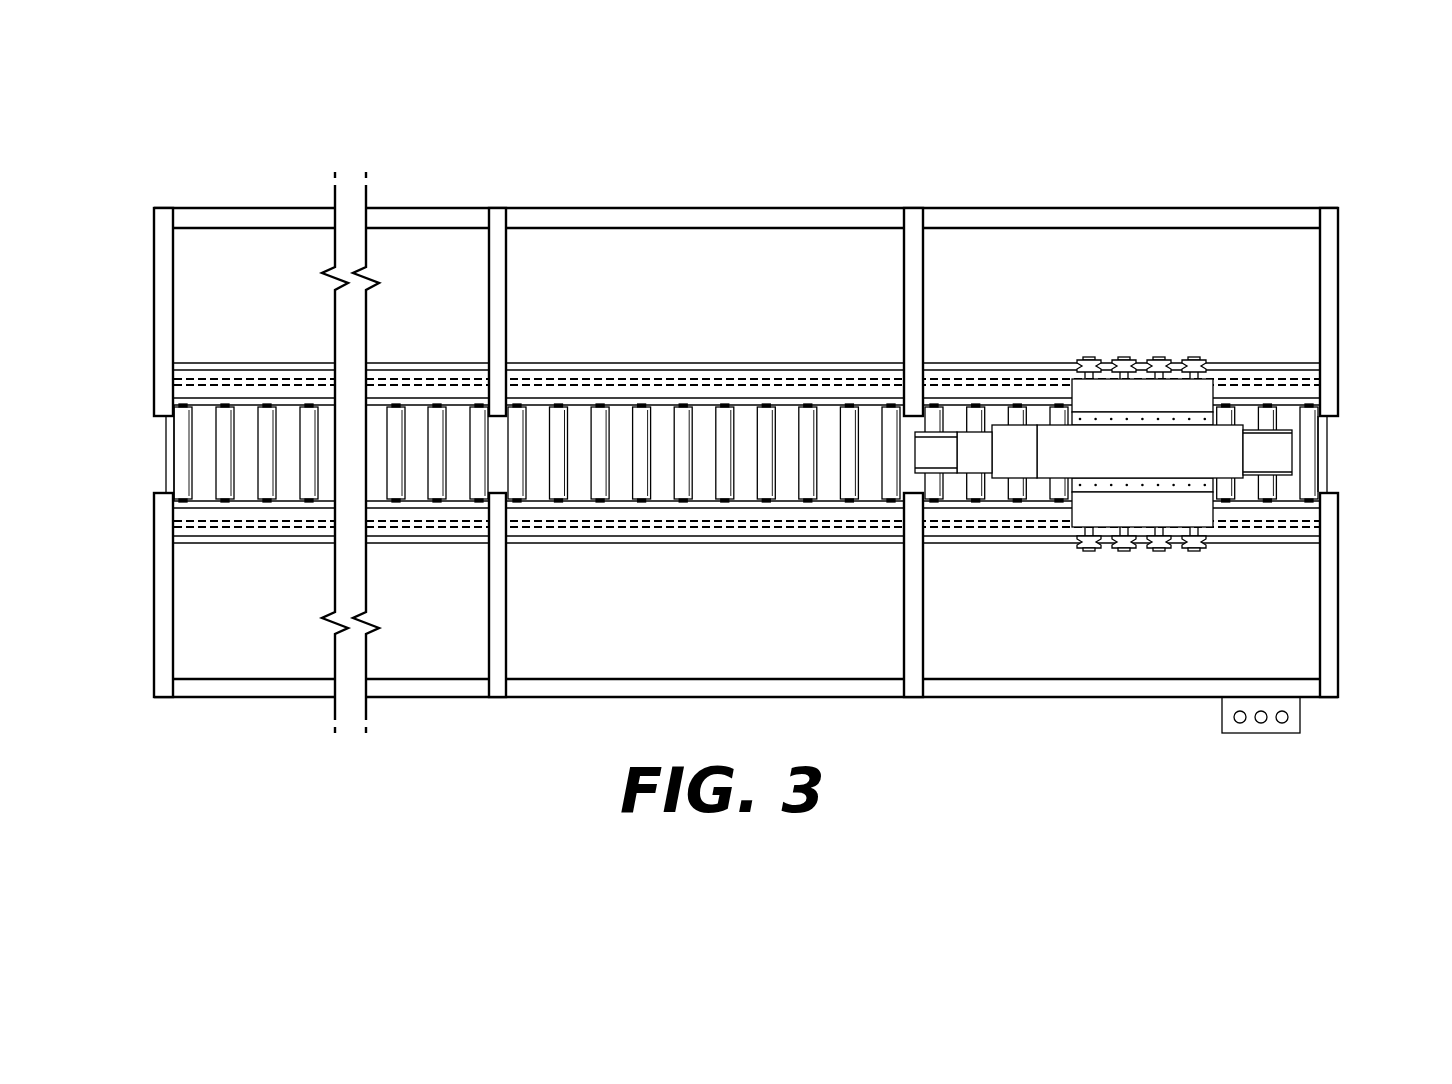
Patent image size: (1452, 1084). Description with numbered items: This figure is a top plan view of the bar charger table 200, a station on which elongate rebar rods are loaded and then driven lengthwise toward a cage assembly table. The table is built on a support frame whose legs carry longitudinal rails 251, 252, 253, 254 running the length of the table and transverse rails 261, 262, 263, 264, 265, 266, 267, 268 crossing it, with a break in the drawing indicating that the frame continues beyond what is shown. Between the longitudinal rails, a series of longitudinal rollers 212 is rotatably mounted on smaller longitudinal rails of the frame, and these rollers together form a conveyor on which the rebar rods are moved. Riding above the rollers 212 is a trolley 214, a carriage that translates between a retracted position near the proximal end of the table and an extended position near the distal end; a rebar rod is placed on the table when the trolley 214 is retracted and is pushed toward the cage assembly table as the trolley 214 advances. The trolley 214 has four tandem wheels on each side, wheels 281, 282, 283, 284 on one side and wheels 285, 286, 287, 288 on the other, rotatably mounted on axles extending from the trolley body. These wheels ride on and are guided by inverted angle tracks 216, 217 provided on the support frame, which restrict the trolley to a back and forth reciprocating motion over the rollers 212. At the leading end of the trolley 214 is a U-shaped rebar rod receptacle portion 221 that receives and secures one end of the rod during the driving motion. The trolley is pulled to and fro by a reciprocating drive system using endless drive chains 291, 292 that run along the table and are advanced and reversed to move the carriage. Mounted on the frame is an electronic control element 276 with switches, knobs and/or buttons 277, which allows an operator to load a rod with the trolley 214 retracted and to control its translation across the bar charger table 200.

The bar charger table 200 is at (658, 108).
The longitudinal rollers 212 is at (723, 457).
The trolley 214 is at (1161, 464).
The inverted angle track 216 is at (1270, 363).
The inverted angle track 217 is at (1270, 547).
The rebar rod receptacle portion 221 is at (928, 452).
The longitudinal rail 251 is at (760, 220).
The longitudinal rail 252 is at (747, 330).
The longitudinal rail 253 is at (747, 576).
The longitudinal rail 254 is at (845, 688).
The transverse rail 261 is at (164, 292).
The transverse rail 262 is at (164, 611).
The transverse rail 263 is at (499, 292).
The transverse rail 264 is at (499, 611).
The transverse rail 265 is at (905, 296).
The transverse rail 266 is at (922, 630).
The transverse rail 267 is at (1328, 292).
The transverse rail 268 is at (1328, 612).
The electronic control element 276 is at (1328, 728).
The switches, knobs and/or buttons 277 is at (1282, 723).
The wheel 281 is at (1080, 552).
The wheel 282 is at (1118, 552).
The wheel 283 is at (1162, 552).
The wheel 284 is at (1200, 552).
The wheel 285 is at (1087, 357).
The wheel 286 is at (1124, 357).
The wheel 287 is at (1160, 357).
The wheel 288 is at (1197, 357).
The drive chain 291 is at (990, 372).
The drive chain 292 is at (1005, 528).